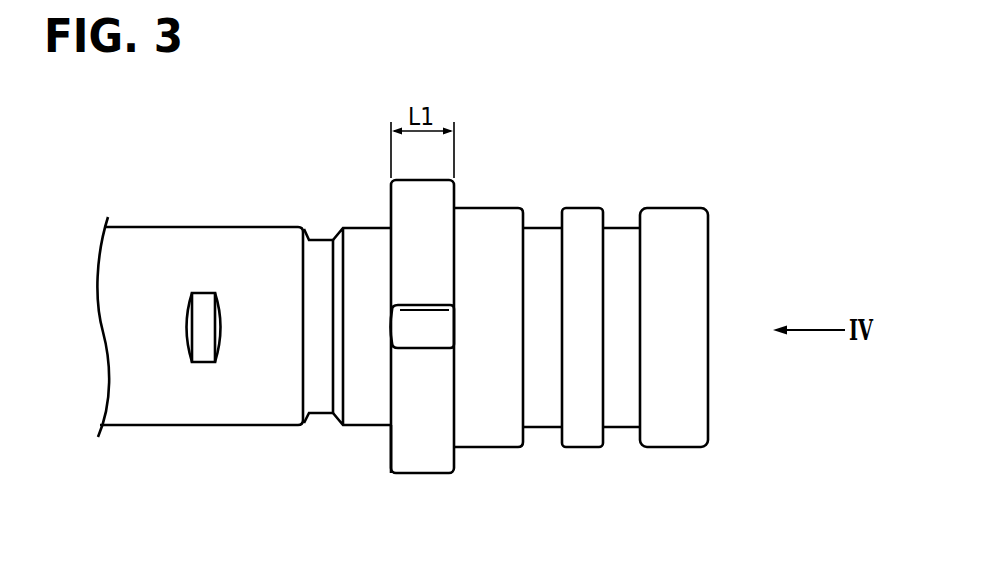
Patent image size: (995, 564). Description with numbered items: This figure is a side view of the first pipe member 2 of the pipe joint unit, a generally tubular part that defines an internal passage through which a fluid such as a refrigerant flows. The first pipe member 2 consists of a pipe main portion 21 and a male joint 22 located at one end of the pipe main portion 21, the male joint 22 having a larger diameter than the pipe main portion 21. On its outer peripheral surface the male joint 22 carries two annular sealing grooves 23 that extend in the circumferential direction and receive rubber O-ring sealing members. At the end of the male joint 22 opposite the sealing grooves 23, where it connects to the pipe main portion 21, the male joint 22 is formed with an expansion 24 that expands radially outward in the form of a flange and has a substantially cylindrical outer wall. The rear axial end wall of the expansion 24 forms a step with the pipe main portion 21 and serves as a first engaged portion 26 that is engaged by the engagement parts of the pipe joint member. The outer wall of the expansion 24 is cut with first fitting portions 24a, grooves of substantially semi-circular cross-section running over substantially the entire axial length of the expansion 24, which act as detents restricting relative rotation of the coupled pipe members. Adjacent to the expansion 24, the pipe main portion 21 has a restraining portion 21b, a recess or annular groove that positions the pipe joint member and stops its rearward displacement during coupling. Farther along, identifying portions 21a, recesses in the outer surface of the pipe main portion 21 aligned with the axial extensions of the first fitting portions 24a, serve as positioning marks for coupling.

The first pipe member 2 is at (402, 337).
The pipe main portion 21 is at (165, 426).
The identifying portions 21a is at (202, 306).
The restraining portion 21b is at (323, 240).
The male joint 22 is at (673, 448).
The sealing grooves 23 is at (622, 228).
The expansion 24 is at (425, 474).
The first fitting portions 24a is at (440, 322).
The first engaged portion 26 is at (391, 446).